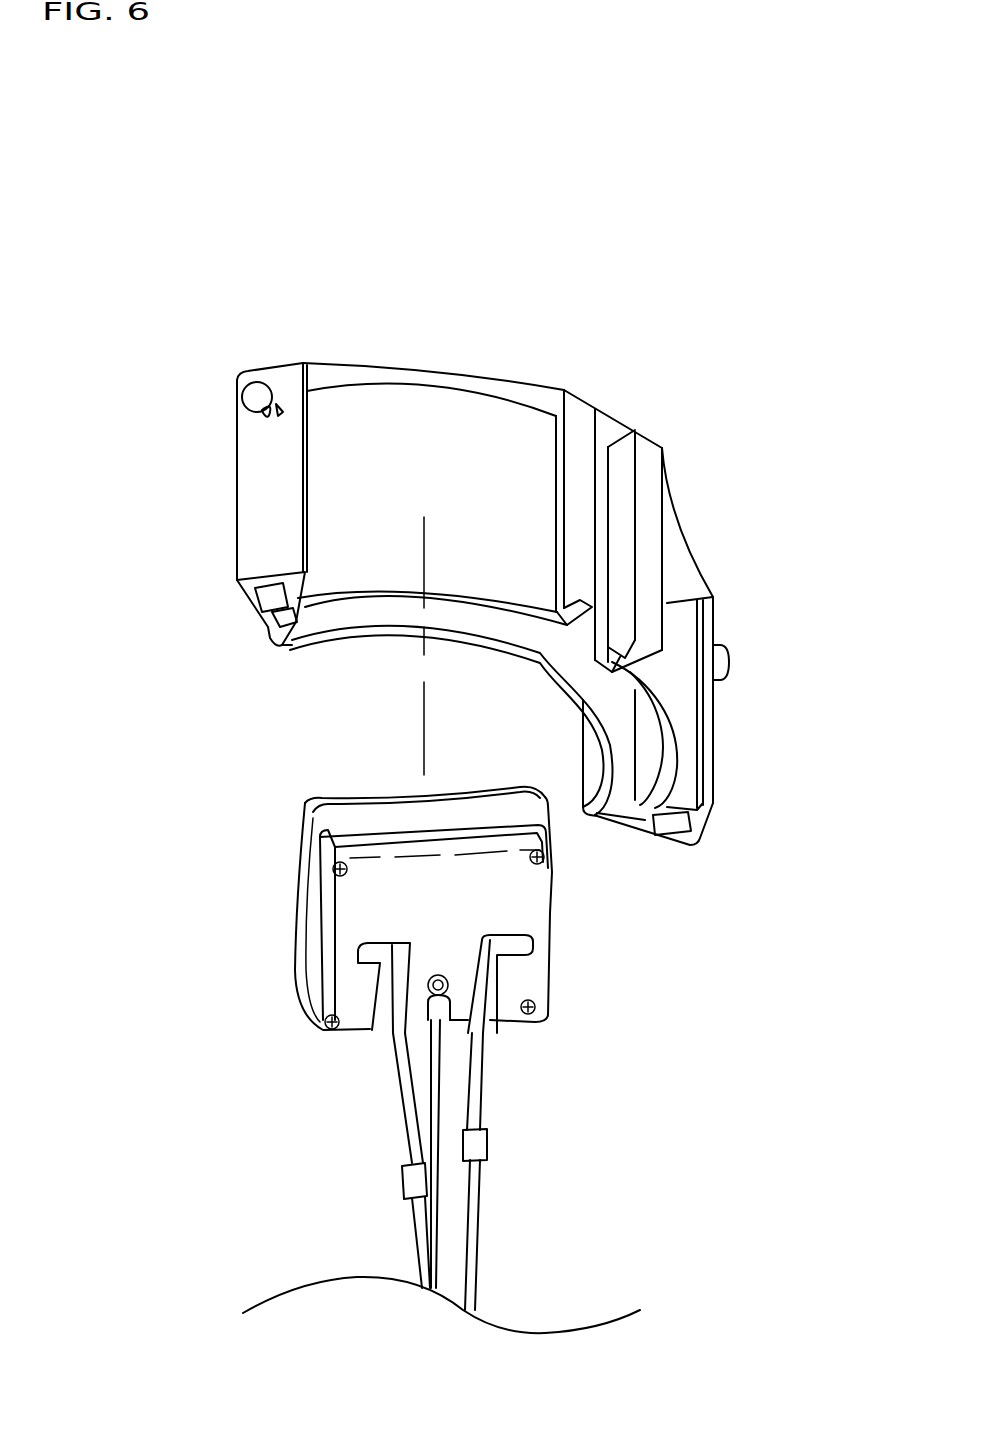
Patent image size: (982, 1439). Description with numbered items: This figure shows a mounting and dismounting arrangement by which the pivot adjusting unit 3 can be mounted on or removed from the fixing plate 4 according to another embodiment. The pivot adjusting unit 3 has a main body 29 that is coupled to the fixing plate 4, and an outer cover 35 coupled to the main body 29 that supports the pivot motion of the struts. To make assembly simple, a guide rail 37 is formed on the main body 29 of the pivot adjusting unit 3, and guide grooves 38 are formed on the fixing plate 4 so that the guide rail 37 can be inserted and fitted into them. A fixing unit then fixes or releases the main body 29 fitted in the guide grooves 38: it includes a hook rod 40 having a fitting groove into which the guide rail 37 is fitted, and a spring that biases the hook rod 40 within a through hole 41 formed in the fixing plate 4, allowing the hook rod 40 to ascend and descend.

The pivot adjusting unit 3 is at (401, 1036).
The fixing plate 4 is at (465, 517).
The main body 29 is at (323, 813).
The outer cover 35 is at (337, 928).
The guide rail 37 is at (313, 863).
The guide grooves 38 is at (267, 630).
The hook rod 40 is at (254, 392).
The through hole 41 is at (280, 408).